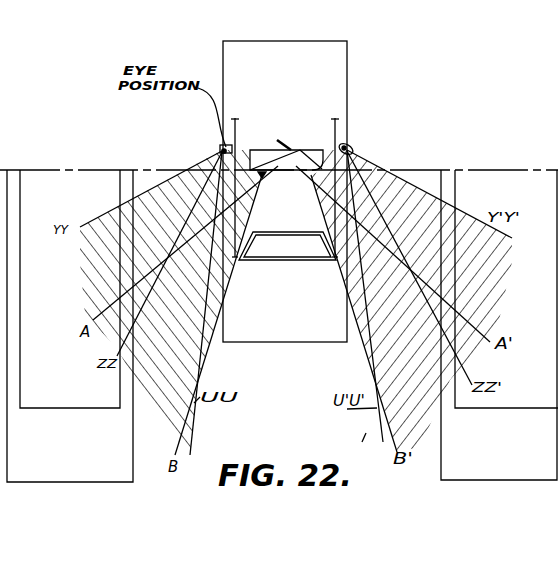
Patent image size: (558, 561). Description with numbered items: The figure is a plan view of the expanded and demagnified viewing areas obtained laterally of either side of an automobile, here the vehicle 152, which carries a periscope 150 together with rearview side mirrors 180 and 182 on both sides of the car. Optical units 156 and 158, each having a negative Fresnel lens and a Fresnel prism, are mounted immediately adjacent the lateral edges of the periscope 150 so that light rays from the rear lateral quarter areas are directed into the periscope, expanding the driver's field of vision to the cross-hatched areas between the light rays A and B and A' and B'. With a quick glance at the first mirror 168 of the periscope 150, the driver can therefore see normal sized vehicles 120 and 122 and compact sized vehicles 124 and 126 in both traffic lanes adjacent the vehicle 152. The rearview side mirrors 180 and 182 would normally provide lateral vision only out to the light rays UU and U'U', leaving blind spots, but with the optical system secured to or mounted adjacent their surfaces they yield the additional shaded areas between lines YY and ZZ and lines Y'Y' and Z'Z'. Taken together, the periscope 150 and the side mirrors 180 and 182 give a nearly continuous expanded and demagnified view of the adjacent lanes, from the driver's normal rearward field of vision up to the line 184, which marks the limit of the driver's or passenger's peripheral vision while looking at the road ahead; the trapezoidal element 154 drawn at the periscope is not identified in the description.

The normal sized vehicle 120 is at (83, 465).
The normal sized vehicle 122 is at (528, 461).
The compact sized vehicle 124 is at (72, 406).
The compact sized vehicle 126 is at (537, 406).
The periscope 150 is at (312, 158).
The vehicle 152 is at (350, 52).
The aperture plate 154 is at (297, 227).
The optical unit 156 is at (263, 174).
The optical unit 158 is at (309, 173).
The first mirror 168 is at (279, 147).
The rearview side mirror 180 is at (222, 147).
The rearview side mirror 182 is at (351, 145).
The limit line of peripheral vision 184 is at (137, 168).